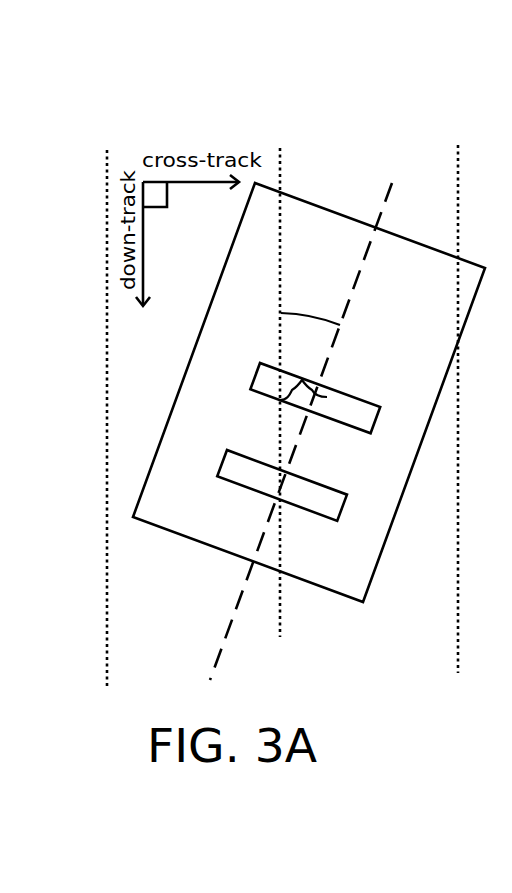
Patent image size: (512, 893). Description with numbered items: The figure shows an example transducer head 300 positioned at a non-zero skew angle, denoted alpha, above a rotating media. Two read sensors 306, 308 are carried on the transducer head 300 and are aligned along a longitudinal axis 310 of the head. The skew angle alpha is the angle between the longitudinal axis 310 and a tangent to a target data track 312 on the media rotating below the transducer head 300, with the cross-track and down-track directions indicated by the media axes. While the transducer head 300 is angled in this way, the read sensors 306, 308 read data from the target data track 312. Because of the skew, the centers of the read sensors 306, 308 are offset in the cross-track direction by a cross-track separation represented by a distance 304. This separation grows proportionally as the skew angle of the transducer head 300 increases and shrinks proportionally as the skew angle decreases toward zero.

The transducer head 300 is at (134, 126).
The distance 304 is at (302, 380).
The read sensor 306 is at (345, 418).
The read sensor 308 is at (342, 498).
The longitudinal axis 310 is at (347, 302).
The target data track 312 is at (280, 235).